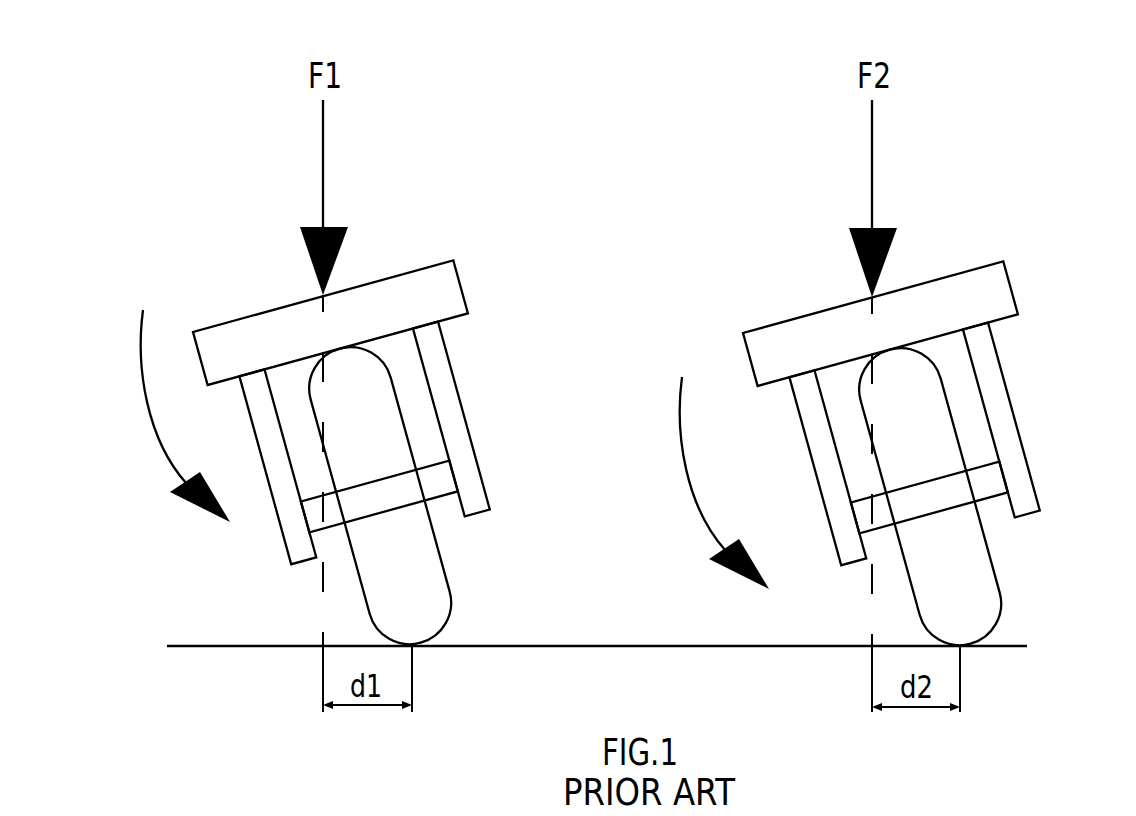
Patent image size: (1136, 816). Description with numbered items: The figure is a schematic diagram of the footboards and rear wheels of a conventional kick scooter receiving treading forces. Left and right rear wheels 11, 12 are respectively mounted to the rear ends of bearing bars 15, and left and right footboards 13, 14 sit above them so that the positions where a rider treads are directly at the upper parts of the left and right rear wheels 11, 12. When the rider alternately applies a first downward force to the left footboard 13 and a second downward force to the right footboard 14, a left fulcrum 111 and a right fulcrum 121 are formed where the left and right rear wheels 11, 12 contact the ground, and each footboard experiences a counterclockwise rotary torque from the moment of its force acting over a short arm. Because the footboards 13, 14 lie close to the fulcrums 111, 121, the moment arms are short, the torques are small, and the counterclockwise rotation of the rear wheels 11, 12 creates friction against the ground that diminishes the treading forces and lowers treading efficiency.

The left rear wheel 11 is at (430, 582).
The left fulcrum 111 is at (412, 646).
The right rear wheel 12 is at (980, 600).
The right fulcrum 121 is at (960, 646).
The left footboard 13 is at (397, 293).
The right footboard 14 is at (797, 340).
The bearing bar 15 is at (445, 413).